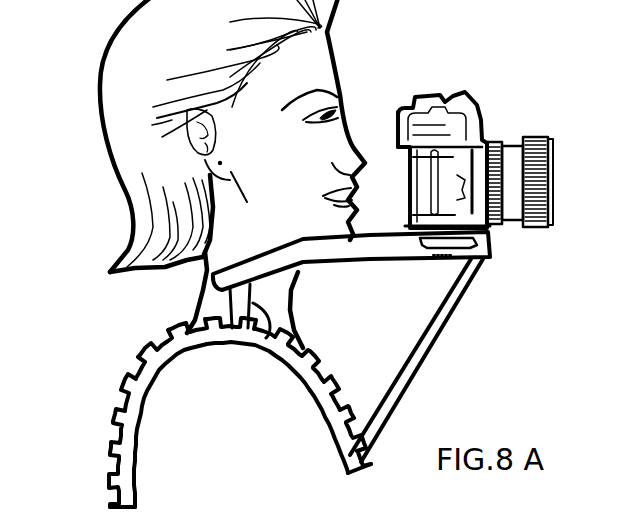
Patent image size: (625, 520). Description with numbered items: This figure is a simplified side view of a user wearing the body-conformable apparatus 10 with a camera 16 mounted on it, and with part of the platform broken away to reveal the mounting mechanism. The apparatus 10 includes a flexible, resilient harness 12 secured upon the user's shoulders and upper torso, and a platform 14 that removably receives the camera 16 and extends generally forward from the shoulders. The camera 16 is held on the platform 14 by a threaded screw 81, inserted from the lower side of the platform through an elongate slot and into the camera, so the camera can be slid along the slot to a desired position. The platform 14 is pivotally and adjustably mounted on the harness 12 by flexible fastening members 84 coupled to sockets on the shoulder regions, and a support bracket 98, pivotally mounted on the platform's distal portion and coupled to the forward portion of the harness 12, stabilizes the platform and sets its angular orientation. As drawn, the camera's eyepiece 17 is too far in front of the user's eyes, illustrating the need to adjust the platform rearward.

The body-conformable apparatus 10 is at (120, 306).
The harness 12 is at (114, 406).
The platform 14 is at (323, 270).
The camera 16 is at (472, 96).
The eyepiece 17 is at (392, 120).
The threaded screw 81 is at (442, 263).
The flexible fastening members 84 is at (268, 352).
The support bracket 98 is at (407, 368).